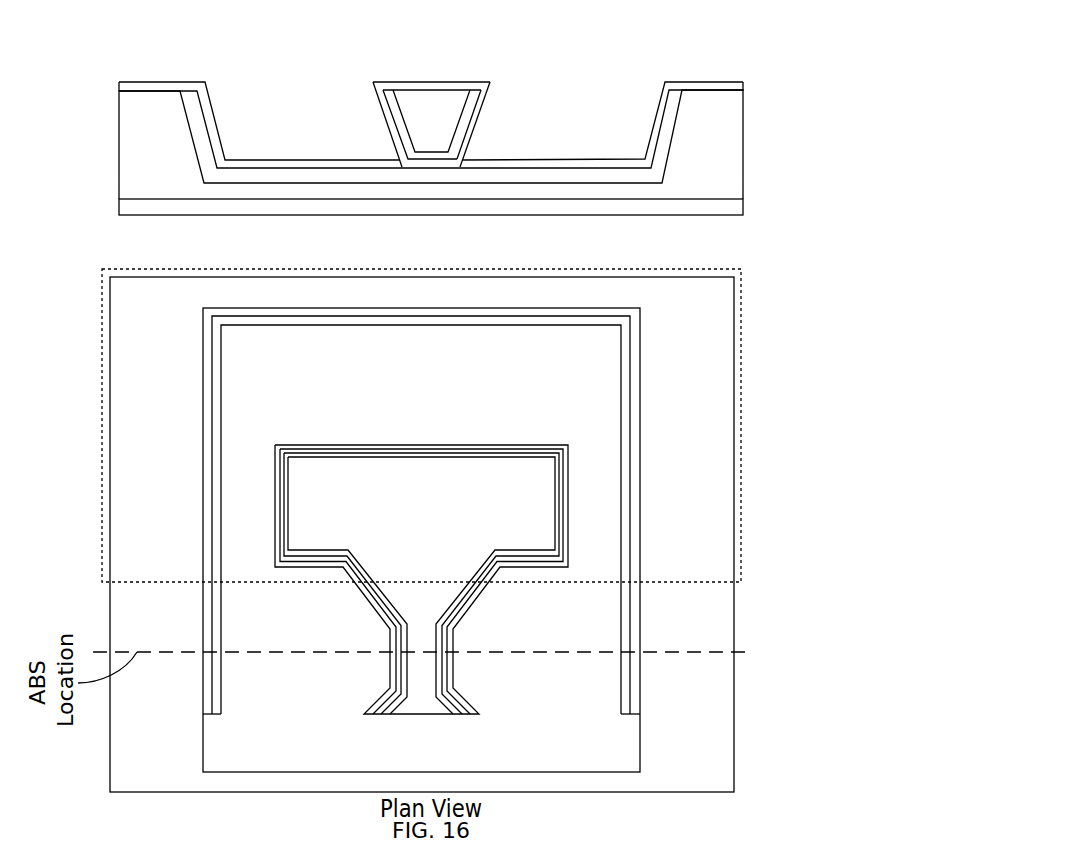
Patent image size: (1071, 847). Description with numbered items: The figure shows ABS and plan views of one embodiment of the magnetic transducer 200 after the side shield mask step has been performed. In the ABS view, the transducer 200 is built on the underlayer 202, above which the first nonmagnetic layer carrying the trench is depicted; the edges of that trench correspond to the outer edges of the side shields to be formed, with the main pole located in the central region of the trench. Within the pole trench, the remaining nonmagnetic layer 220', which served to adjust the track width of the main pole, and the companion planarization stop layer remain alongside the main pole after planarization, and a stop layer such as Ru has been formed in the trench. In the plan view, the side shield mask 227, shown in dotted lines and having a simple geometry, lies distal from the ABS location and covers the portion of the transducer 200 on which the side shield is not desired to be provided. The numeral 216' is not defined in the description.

The magnetic transducer 200 is at (201, 30).
The underlayer 202 is at (119, 211).
The main pole trench outline 216' is at (415, 551).
The nonmagnetic layer 220' is at (386, 107).
The side shield mask 227 is at (741, 550).